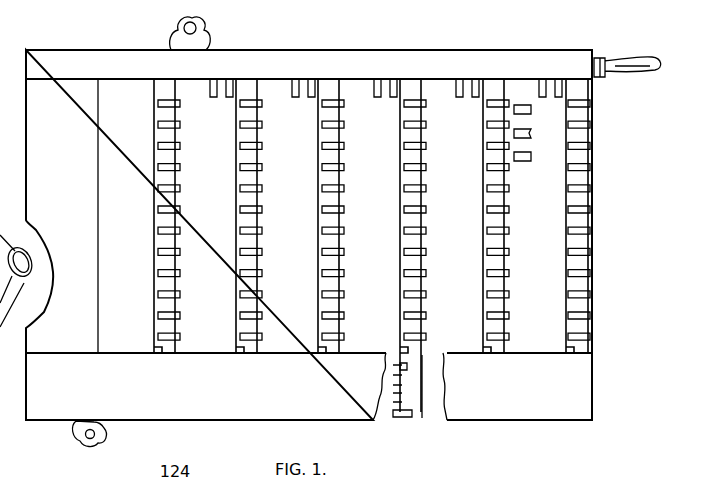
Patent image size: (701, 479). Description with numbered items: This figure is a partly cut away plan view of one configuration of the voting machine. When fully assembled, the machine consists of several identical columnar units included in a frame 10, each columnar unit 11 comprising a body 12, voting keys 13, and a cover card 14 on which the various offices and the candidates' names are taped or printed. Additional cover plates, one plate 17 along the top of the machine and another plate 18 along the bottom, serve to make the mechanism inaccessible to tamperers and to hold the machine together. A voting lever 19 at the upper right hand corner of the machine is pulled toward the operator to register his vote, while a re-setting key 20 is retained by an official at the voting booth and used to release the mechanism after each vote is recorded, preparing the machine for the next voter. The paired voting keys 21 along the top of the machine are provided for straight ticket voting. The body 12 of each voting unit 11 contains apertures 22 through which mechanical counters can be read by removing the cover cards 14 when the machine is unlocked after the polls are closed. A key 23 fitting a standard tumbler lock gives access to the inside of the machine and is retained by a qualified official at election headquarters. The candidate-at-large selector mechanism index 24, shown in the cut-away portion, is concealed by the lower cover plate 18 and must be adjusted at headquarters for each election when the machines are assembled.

The frame 10 is at (107, 49).
The columnar unit 11 is at (214, 334).
The body 12 is at (507, 177).
The voting keys 13 is at (262, 273).
The cover card 14 is at (452, 258).
The cover plate 17 is at (297, 62).
The cover plate 18 is at (218, 404).
The voting lever 19 is at (600, 74).
The re-setting key 20 is at (209, 36).
The paired voting keys 21 is at (312, 97).
The apertures 22 is at (523, 124).
The key 23 is at (78, 441).
The candidate-at-large selector mechanism index 24 is at (395, 383).